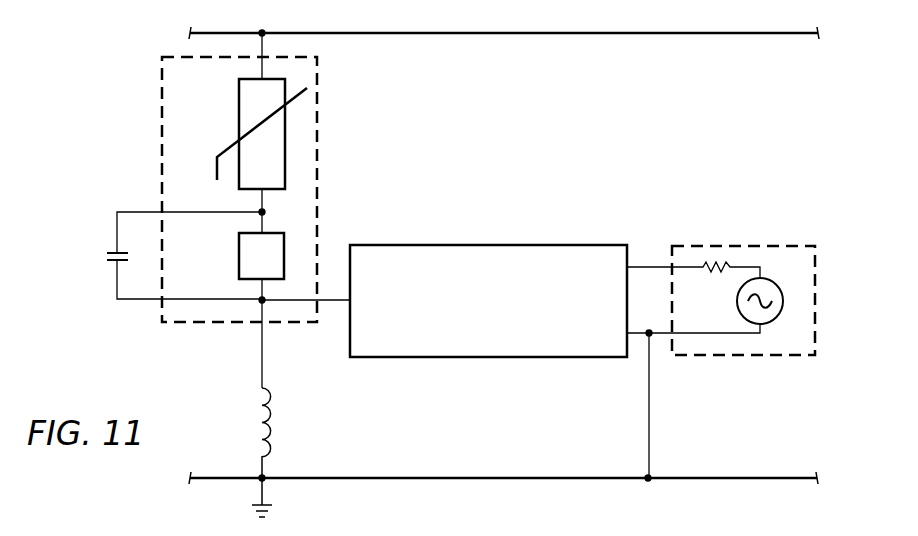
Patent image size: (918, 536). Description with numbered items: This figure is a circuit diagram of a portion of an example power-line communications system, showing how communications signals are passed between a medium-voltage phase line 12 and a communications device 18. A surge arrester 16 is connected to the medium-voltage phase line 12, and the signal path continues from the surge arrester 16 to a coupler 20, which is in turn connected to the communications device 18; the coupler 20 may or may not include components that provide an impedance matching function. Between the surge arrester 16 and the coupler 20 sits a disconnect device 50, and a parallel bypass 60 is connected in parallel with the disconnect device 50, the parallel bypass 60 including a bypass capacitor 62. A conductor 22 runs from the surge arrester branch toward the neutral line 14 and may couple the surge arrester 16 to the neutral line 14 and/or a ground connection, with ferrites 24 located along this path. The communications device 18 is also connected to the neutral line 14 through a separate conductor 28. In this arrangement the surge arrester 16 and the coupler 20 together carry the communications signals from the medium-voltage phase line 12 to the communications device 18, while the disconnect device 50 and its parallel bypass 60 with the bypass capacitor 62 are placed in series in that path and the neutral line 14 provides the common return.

The medium-voltage phase line 12 is at (595, 35).
The neutral line 14 is at (535, 478).
The surge arrester 16 is at (239, 110).
The communications device 18 is at (747, 246).
The coupler 20 is at (500, 311).
The conductor 22 is at (262, 350).
The ferrites 24 is at (279, 430).
The conductor 28 is at (649, 420).
The disconnect device 50 is at (239, 257).
The parallel bypass 60 is at (140, 212).
The bypass capacitor 62 is at (105, 257).